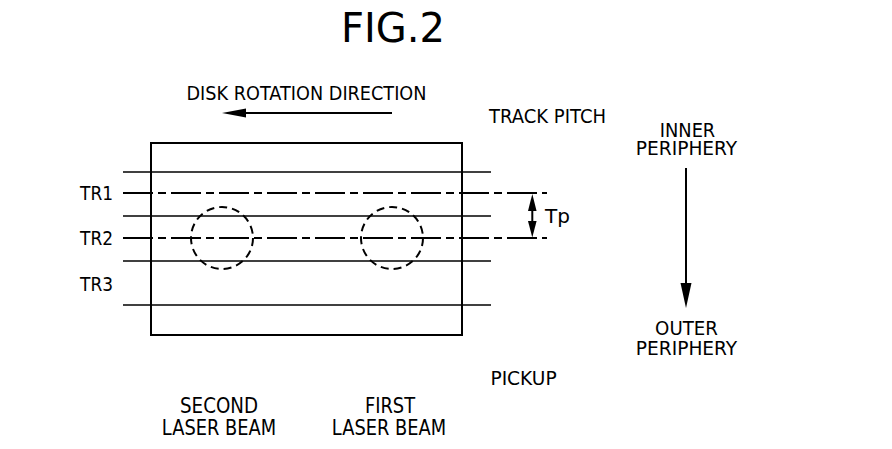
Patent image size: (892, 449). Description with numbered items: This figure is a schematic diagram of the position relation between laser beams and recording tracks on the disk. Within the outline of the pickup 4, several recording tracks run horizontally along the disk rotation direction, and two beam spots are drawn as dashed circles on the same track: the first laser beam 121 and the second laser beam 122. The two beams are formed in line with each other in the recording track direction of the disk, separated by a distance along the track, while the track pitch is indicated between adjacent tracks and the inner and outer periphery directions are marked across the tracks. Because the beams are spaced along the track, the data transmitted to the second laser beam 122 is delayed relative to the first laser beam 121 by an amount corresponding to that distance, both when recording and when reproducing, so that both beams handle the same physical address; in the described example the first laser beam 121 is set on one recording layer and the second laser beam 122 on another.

The pickup 4 is at (447, 322).
The first laser beam 121 is at (392, 353).
The second laser beam 122 is at (222, 353).